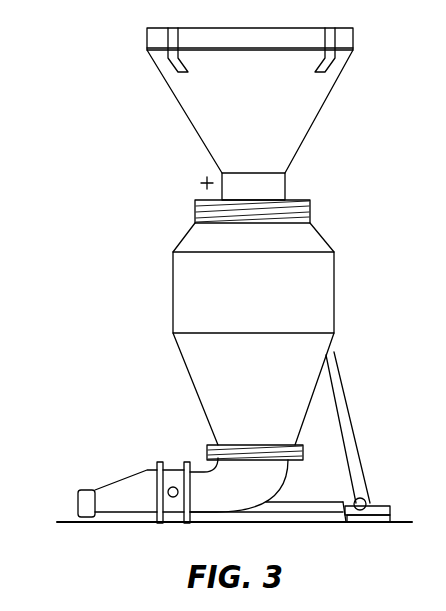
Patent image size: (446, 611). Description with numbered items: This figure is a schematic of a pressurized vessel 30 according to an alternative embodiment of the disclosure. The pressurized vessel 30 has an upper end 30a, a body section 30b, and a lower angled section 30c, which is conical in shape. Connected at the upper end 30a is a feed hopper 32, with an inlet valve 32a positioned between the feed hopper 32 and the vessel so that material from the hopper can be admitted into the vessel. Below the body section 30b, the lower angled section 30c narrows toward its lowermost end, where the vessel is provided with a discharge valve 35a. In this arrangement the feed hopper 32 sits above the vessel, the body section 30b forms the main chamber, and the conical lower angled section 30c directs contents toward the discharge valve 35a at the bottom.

The pressurized vessel 30 is at (245, 372).
The upper end 30a is at (192, 238).
The body section 30b is at (277, 304).
The lower angled section 30c is at (277, 392).
The feed hopper 32 is at (317, 87).
The inlet valve 32a is at (205, 192).
The discharge valve 35a is at (165, 452).